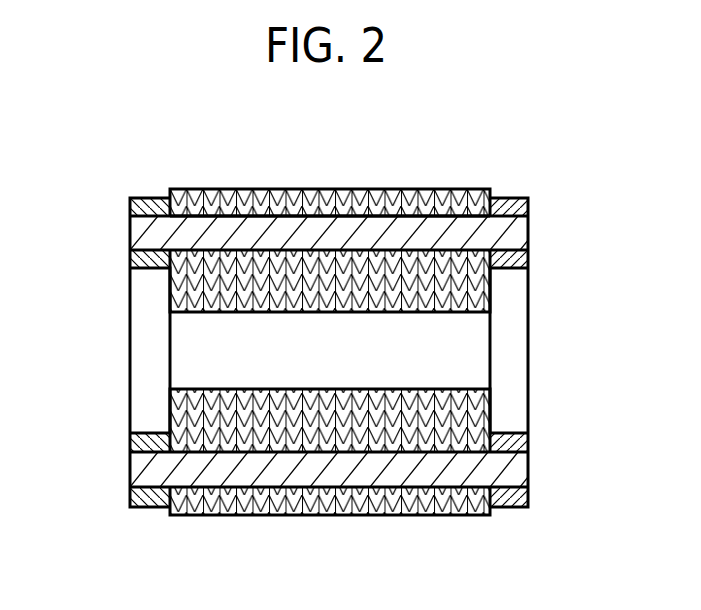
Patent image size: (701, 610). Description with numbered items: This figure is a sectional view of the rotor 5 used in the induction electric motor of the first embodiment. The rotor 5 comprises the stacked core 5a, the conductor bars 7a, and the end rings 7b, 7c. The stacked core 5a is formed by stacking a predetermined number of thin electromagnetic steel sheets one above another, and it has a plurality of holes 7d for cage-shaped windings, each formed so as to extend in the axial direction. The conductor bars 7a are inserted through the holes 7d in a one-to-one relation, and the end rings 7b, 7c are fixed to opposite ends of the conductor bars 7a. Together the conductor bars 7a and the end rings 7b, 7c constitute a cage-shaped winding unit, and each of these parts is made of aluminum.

The rotor 5 is at (365, 188).
The stacked core 5a is at (453, 388).
The conductor bars 7a is at (257, 232).
The end ring 7b is at (133, 265).
The end ring 7c is at (520, 263).
The holes for cage-shaped windings 7d is at (433, 216).